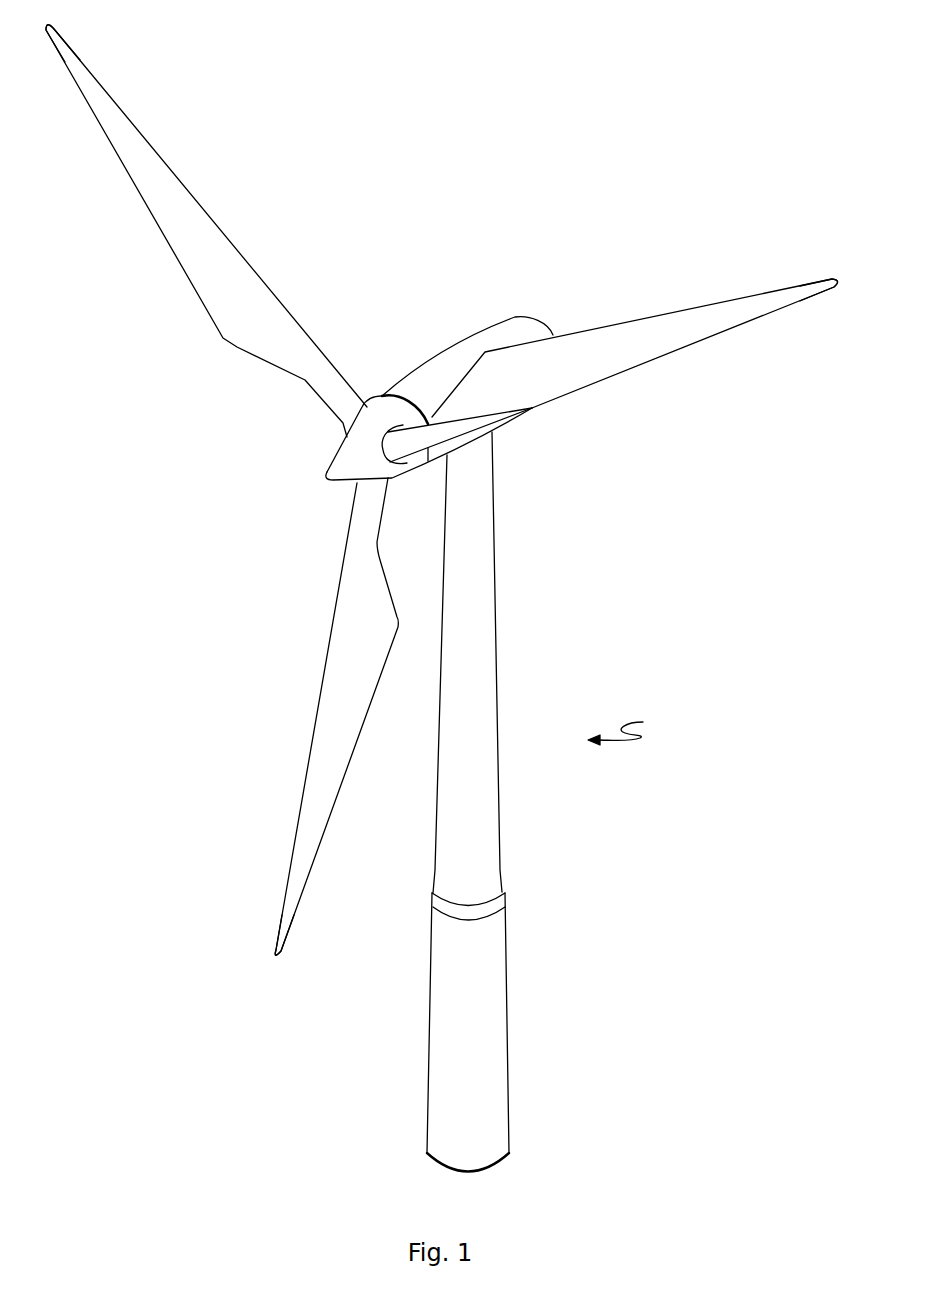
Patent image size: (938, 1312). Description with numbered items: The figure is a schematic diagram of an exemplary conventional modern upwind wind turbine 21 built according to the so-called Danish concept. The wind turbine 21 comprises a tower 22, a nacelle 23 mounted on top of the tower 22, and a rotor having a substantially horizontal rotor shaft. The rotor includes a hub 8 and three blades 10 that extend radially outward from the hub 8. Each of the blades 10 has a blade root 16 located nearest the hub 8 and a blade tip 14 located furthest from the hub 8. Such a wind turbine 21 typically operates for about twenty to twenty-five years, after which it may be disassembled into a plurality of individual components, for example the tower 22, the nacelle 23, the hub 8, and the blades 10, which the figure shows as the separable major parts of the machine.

The hub 8 is at (343, 457).
The blades 10 is at (237, 313).
The blade tip 14 is at (94, 80).
The blade root 16 is at (341, 432).
The wind turbine 21 is at (642, 727).
The tower 22 is at (485, 665).
The nacelle 23 is at (436, 376).